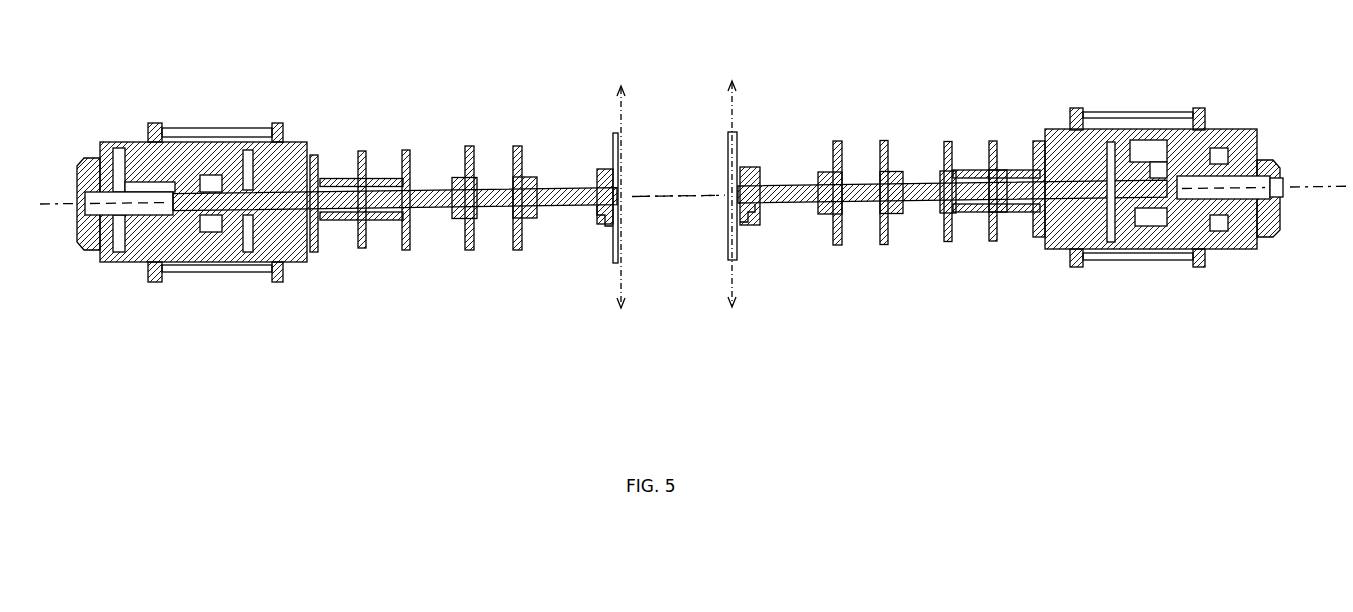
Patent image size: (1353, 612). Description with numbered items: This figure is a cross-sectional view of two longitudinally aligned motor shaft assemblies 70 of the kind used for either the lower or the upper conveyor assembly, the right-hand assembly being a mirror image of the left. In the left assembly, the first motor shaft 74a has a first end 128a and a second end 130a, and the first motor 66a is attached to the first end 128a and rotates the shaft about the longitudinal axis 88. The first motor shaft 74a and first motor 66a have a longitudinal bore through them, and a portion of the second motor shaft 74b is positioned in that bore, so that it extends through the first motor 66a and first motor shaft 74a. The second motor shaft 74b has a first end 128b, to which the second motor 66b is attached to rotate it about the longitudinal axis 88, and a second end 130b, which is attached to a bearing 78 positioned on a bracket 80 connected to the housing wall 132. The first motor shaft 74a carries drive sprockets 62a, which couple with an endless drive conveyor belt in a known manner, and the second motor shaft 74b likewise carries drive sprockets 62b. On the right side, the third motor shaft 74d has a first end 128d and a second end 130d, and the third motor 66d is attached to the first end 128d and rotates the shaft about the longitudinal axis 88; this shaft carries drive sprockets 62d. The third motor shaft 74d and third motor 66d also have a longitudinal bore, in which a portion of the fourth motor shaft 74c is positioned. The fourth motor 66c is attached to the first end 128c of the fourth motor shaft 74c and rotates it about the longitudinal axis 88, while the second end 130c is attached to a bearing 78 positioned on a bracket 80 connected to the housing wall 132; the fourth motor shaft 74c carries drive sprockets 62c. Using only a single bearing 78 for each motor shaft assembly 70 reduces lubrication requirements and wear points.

The motor shaft assembly 70 is at (695, 188).
The first motor 66a is at (280, 142).
The second motor 66b is at (125, 152).
The fourth motor 66c is at (1217, 128).
The third motor 66d is at (1060, 128).
The first end of first motor shaft 128a is at (344, 170).
The first end of second motor shaft 128b is at (197, 268).
The first end of fourth motor shaft 128c is at (1190, 267).
The first end of third motor shaft 128d is at (1025, 218).
The first motor shaft 74a is at (360, 152).
The second motor shaft 74b is at (498, 209).
The fourth motor shaft 74c is at (866, 214).
The third motor shaft 74d is at (982, 224).
The drive sprockets 62a is at (378, 177).
The drive sprockets 62b is at (494, 213).
The drive sprockets 62c is at (860, 213).
The drive sprockets 62d is at (955, 224).
The second end of first motor shaft 130a is at (406, 152).
The second end of second motor shaft 130b is at (612, 262).
The second end of fourth motor shaft 130c is at (750, 207).
The second end of third motor shaft 130d is at (953, 240).
The bearing 78 is at (604, 166).
The bracket 80 is at (600, 232).
The housing wall 132 is at (727, 103).
The longitudinal axis 88 is at (683, 205).